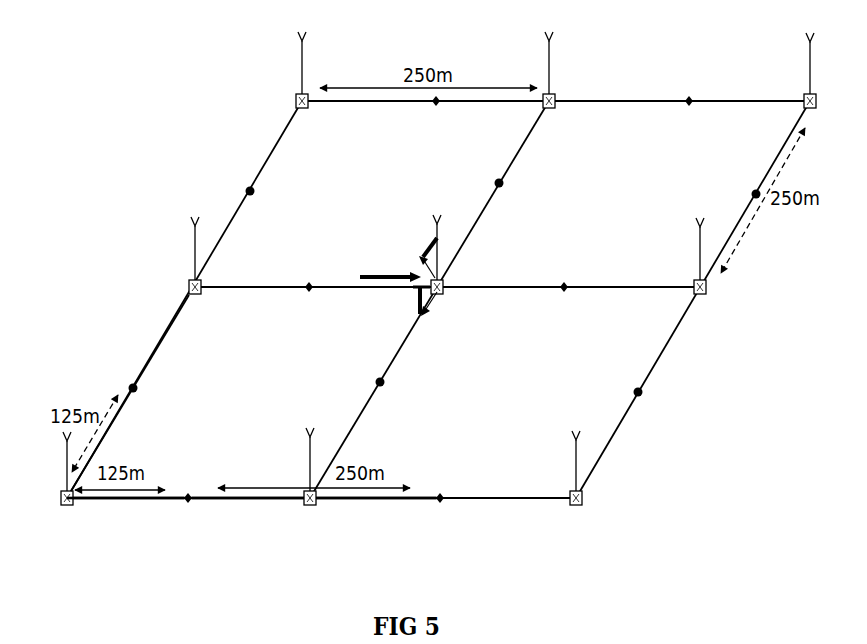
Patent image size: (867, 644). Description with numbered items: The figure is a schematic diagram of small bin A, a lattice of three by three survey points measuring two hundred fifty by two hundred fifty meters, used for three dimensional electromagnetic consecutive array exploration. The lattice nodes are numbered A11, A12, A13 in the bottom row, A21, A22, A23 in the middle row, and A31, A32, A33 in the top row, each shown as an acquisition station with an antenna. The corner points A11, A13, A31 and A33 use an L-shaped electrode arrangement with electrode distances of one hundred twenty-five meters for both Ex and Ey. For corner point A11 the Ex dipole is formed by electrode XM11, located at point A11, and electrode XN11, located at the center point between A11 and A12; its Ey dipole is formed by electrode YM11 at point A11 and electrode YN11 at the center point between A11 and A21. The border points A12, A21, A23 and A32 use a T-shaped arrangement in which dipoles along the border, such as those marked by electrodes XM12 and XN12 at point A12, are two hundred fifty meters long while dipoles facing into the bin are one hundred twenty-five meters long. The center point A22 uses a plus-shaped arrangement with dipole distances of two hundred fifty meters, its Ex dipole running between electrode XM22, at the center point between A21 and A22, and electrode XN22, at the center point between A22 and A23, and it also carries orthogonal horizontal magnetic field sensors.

The corner point A11 is at (56, 487).
The border point A12 is at (315, 485).
The corner point A13 is at (579, 487).
The border point A21 is at (200, 273).
The center point A22 is at (416, 272).
The border point A23 is at (714, 273).
The corner point A31 is at (309, 88).
The border point A32 is at (564, 88).
The corner point A33 is at (825, 88).
The Ex electrode of center point XM22 is at (363, 274).
The Ex electrode of center point XN22 is at (516, 273).
The Ex electrode of border point XM12 is at (237, 487).
The Ex electrode of border point XN12 is at (388, 487).
The Ex electrode of corner point XM11 is at (93, 513).
The Ex electrode of corner point XN11 is at (139, 513).
The Ey electrode of corner point YM11 is at (73, 444).
The Ey electrode of corner point YN11 is at (136, 342).